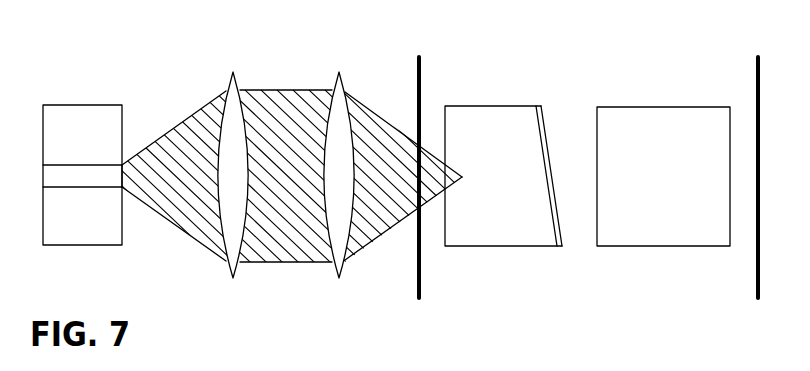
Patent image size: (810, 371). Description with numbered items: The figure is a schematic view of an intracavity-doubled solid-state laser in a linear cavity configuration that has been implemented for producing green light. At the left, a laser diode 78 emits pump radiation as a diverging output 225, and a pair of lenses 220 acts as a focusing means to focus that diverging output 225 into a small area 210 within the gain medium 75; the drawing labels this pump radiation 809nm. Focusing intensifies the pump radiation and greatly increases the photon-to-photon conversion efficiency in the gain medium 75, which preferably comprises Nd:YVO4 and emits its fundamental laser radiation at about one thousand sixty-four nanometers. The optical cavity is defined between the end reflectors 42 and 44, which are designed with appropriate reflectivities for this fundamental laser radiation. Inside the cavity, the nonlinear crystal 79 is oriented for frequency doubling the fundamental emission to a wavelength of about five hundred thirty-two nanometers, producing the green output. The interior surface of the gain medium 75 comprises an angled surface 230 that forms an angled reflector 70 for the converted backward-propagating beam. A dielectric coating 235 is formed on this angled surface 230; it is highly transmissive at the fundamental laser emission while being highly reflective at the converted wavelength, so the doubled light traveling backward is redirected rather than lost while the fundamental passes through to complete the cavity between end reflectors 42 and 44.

The laser diode 78 is at (78, 105).
The diverging output 225 is at (163, 135).
The lenses 220 is at (233, 72).
The pump light wavelength 809nm is at (385, 128).
The small area 210 is at (455, 175).
The end reflector 42 is at (421, 283).
The angled reflector 70 is at (532, 180).
The gain medium 75 is at (490, 160).
The angled surface 230 is at (550, 206).
The dielectric coating 235 is at (565, 227).
The nonlinear crystal 79 is at (652, 190).
The end reflector 44 is at (758, 272).